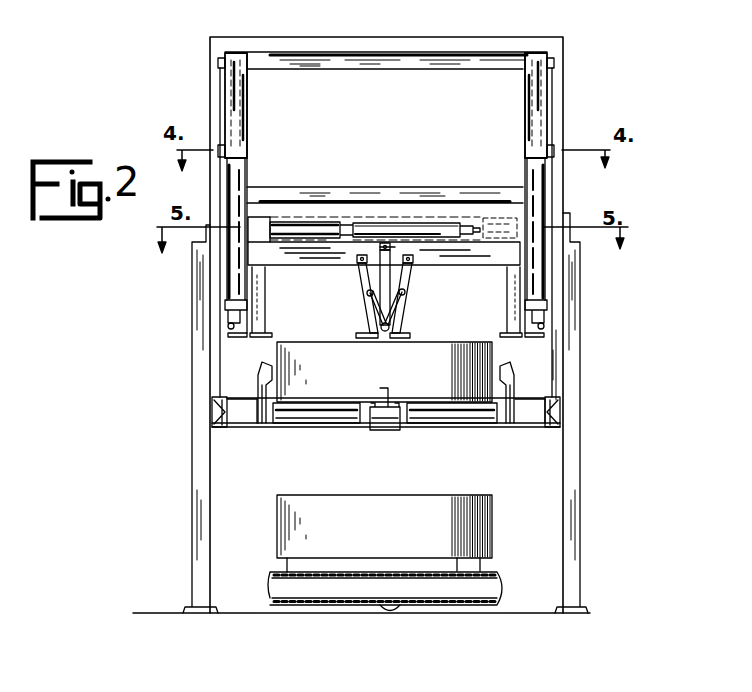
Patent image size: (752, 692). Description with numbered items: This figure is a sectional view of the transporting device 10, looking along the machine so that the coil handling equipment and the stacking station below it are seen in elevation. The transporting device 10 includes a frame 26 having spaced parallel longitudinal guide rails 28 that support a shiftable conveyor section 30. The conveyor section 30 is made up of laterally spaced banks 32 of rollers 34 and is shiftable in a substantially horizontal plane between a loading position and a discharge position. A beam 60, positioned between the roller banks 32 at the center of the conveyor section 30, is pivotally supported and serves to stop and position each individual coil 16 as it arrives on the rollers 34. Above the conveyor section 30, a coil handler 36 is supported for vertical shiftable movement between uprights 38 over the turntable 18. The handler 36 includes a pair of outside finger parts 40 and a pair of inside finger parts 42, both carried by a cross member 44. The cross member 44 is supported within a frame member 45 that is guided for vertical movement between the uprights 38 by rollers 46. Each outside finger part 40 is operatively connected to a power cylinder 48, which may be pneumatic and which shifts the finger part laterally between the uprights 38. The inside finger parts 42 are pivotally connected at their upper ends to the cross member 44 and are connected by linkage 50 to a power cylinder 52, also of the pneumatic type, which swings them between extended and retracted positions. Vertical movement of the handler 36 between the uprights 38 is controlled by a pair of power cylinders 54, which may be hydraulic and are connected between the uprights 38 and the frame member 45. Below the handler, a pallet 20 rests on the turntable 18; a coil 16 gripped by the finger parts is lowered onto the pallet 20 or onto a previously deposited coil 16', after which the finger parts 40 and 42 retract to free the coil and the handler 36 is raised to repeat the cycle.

The transporting device 10 is at (592, 93).
The banded coil 16 is at (384, 357).
The previously deposited coil 16' is at (384, 510).
The turntable 18 is at (440, 608).
The pallet 20 is at (470, 563).
The frame 26 is at (198, 491).
The guide rails 28 is at (220, 428).
The conveyor section 30 is at (303, 424).
The roller banks 32 is at (290, 428).
The rollers 34 is at (333, 428).
The coil handler 36 is at (476, 205).
The uprights 38 is at (210, 90).
The outside finger parts 40 is at (266, 287).
The inside finger parts 42 is at (366, 310).
The cross member 44 is at (343, 263).
The frame member 45 is at (248, 173).
The rollers 46 is at (218, 63).
The power cylinder 48 is at (452, 238).
The linkage 50 is at (394, 320).
The power cylinder 52 is at (388, 272).
The power cylinders 54 is at (230, 272).
The beam 60 is at (384, 416).